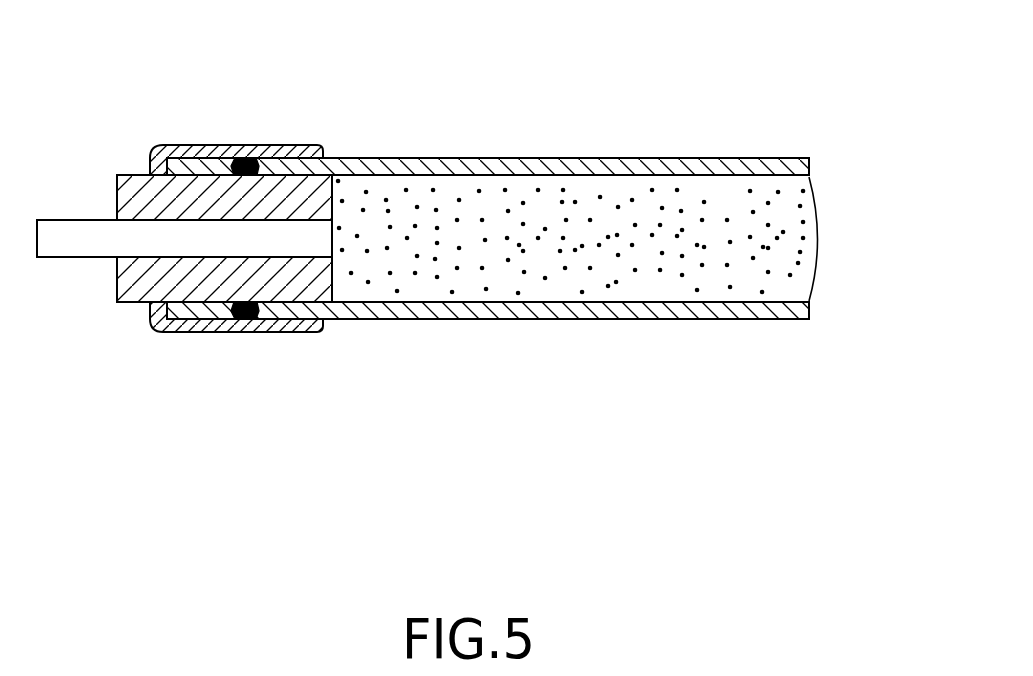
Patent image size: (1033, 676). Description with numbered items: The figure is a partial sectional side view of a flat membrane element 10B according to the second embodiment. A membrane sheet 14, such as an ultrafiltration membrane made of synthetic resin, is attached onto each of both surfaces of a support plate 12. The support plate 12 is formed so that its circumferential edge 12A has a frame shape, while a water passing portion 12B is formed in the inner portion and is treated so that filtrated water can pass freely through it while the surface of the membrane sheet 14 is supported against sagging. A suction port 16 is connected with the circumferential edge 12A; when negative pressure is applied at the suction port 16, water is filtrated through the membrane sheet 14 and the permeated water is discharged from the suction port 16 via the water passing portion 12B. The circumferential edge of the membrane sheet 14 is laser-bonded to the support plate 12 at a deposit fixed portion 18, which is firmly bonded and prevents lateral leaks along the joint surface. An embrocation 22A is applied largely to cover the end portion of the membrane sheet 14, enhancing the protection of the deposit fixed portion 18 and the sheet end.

The flat membrane element 10B is at (540, 118).
The support plate 12 is at (848, 235).
The circumferential edge 12A is at (116, 176).
The water passing portion 12B is at (496, 282).
The membrane sheet 14 is at (695, 158).
The suction port 16 is at (56, 232).
The deposit fixed portion 18 is at (248, 162).
The embrocation 22A is at (193, 146).